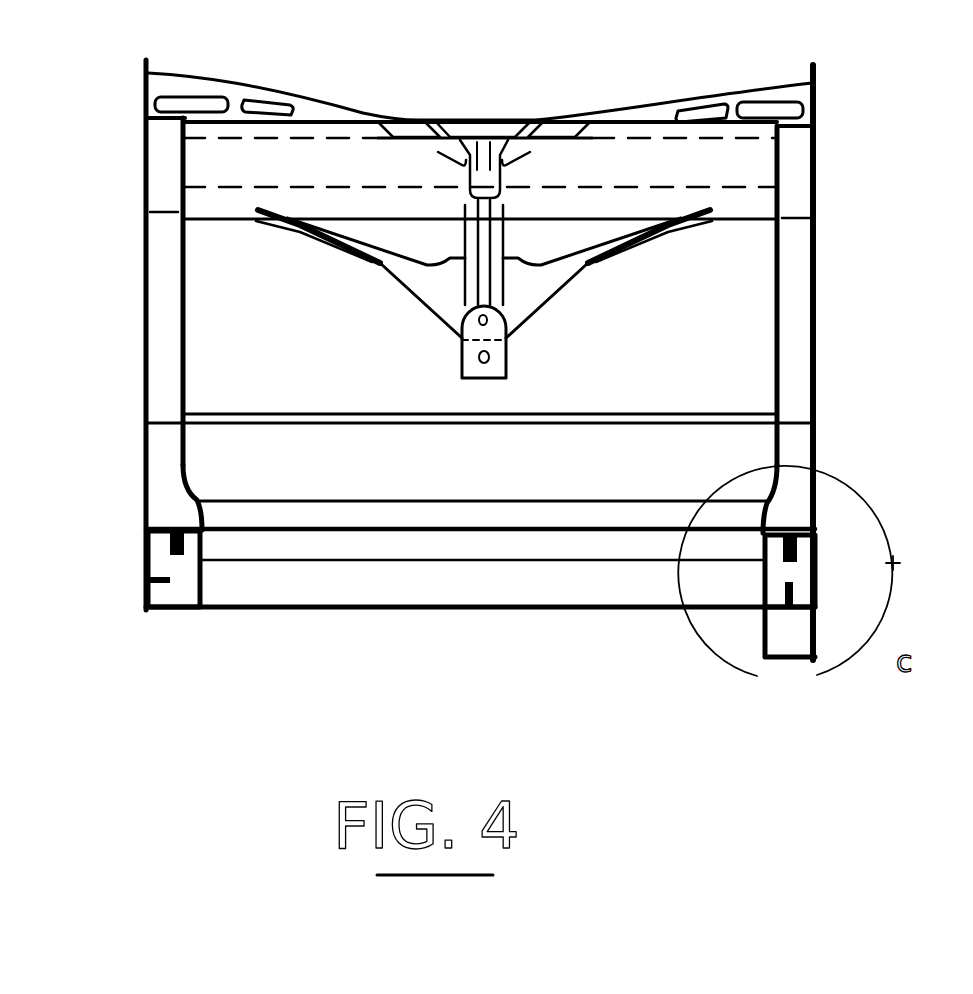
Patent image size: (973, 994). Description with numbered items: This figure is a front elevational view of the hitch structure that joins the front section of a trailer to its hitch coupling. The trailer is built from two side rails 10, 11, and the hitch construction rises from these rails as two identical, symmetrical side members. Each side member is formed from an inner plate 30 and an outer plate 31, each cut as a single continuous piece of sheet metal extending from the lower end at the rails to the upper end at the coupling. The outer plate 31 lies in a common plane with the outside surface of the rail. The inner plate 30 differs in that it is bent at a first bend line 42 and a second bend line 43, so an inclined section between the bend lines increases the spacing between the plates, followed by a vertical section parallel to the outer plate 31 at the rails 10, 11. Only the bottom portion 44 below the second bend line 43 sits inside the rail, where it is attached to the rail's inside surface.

The side rail 10 is at (817, 583).
The side rail 11 is at (174, 603).
The inner plate 30 is at (775, 285).
The outer plate 31 is at (820, 250).
The first bend line 42 is at (783, 468).
The second bend line 43 is at (758, 520).
The bottom portion of inner plate 44 is at (758, 582).